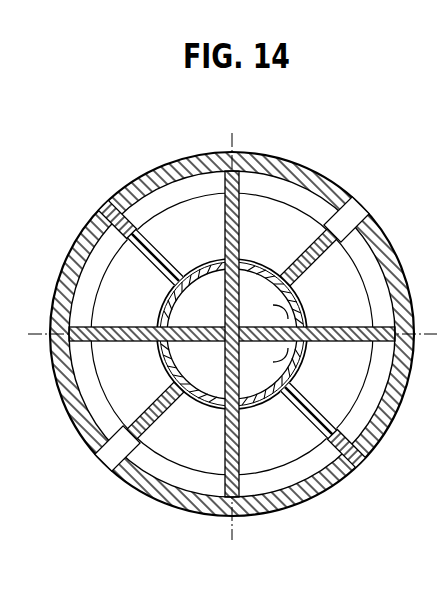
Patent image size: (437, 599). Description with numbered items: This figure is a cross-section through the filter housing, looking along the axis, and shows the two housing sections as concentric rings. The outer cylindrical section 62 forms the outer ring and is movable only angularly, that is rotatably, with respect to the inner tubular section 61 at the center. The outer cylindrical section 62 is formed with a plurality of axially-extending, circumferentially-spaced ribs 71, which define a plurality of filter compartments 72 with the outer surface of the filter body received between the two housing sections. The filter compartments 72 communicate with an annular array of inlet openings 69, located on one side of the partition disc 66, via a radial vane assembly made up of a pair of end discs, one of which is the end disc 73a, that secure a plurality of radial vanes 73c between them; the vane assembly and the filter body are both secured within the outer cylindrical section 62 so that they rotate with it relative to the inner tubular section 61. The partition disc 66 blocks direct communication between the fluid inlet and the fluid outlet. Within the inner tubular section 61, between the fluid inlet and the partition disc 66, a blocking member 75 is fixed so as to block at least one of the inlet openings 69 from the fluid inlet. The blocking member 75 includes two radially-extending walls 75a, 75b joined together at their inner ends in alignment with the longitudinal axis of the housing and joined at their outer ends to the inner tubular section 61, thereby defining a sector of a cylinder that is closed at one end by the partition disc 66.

The outer cylindrical section 62 is at (280, 158).
The filter compartments 72 is at (180, 183).
The ribs 71 is at (137, 202).
The radial vanes 73c is at (368, 210).
The end disc 73a is at (357, 298).
The inlet openings 69 is at (203, 268).
The inner tubular section 61 is at (252, 263).
The partition disc 66 is at (299, 321).
The radially-extending wall 75b is at (145, 270).
The blocking member 75 is at (191, 355).
The radially-extending wall 75a is at (297, 368).